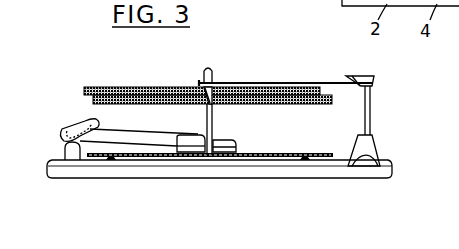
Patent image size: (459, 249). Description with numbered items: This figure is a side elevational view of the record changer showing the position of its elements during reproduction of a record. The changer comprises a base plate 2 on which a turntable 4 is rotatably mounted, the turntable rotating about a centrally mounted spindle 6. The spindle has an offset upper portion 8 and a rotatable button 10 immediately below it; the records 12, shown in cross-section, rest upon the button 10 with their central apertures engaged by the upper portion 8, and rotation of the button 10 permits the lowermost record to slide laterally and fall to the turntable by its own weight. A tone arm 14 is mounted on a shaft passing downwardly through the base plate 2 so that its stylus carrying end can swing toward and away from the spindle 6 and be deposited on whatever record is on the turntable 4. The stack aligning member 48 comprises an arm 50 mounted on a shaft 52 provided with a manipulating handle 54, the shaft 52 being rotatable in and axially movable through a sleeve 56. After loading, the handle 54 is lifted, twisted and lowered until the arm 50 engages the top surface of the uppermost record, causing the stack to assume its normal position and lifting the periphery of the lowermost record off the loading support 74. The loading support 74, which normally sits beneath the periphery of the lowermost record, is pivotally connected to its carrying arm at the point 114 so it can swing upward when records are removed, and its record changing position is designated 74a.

The base plate 2 is at (190, 168).
The turntable 4 is at (162, 159).
The spindle 6 is at (213, 125).
The offset upper portion 8 is at (211, 77).
The rotatable button 10 is at (213, 105).
The records 12 is at (208, 77).
The tone arm 14 is at (127, 133).
The stack aligning member 48 is at (258, 81).
The arm 50 is at (293, 83).
The shaft 52 is at (370, 110).
The manipulating handle 54 is at (367, 75).
The sleeve 56 is at (372, 147).
The loading support 74 is at (56, 113).
The record changing position of loading support 74a is at (92, 118).
The pivot point 114 is at (60, 142).